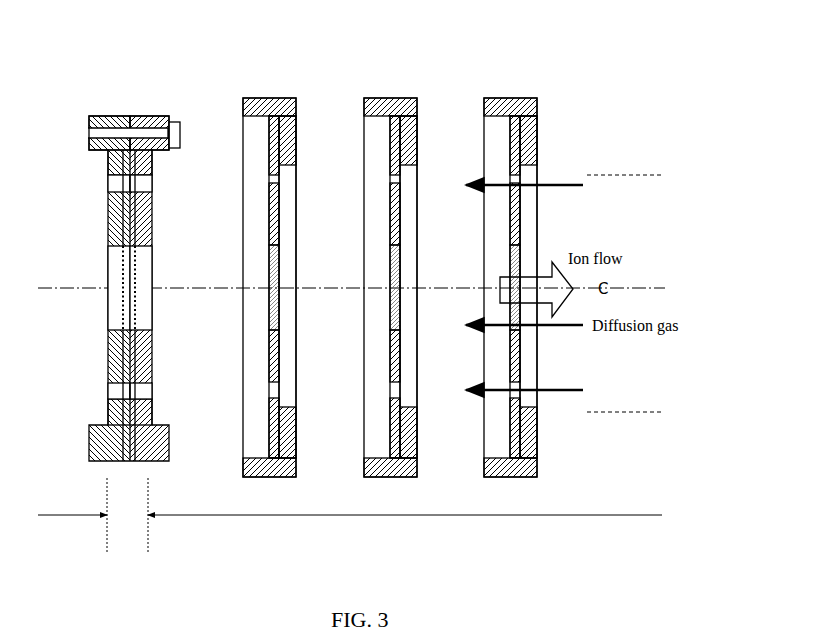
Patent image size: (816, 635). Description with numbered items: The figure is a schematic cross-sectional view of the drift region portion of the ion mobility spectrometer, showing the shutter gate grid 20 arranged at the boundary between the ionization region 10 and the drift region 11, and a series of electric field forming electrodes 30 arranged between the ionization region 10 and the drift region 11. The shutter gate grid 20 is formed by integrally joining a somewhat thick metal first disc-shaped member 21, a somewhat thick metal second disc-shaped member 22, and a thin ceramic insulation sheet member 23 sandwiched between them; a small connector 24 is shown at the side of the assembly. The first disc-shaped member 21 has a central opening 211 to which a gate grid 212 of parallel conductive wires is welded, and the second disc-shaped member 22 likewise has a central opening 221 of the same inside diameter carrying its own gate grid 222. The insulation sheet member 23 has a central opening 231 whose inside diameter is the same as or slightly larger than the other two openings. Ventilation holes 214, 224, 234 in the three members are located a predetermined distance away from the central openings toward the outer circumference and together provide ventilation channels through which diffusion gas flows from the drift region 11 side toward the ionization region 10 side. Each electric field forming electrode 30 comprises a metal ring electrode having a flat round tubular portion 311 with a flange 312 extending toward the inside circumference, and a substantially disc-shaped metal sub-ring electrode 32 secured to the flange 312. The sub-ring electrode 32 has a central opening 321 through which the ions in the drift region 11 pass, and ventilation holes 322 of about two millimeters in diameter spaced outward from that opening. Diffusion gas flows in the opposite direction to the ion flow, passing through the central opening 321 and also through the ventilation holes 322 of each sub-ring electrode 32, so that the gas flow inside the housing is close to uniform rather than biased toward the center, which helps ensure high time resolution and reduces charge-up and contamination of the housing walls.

The ionization region 10 is at (72, 521).
The drift region 11 is at (405, 521).
The shutter gate grid 20 is at (86, 57).
The first disc-shaped member 21 is at (108, 118).
The second disc-shaped member 22 is at (141, 118).
The insulation sheet member 23 is at (128, 118).
The connector 24 is at (176, 122).
The central opening 211 is at (108, 256).
The gate grid 212 is at (123, 310).
The ventilation holes 214 is at (108, 189).
The central opening 221 is at (148, 257).
The gate grid 222 is at (135, 312).
The ventilation holes 224 is at (152, 189).
The central opening 231 is at (123, 283).
The ventilation holes 234 is at (107, 171).
The electric field forming electrodes 30 is at (248, 57).
The flat round tubular portion 311 is at (262, 100).
The flange 312 is at (297, 131).
The sub-ring electrode 32 is at (268, 152).
The central opening 321 is at (277, 262).
The ventilation holes 322 is at (278, 182).